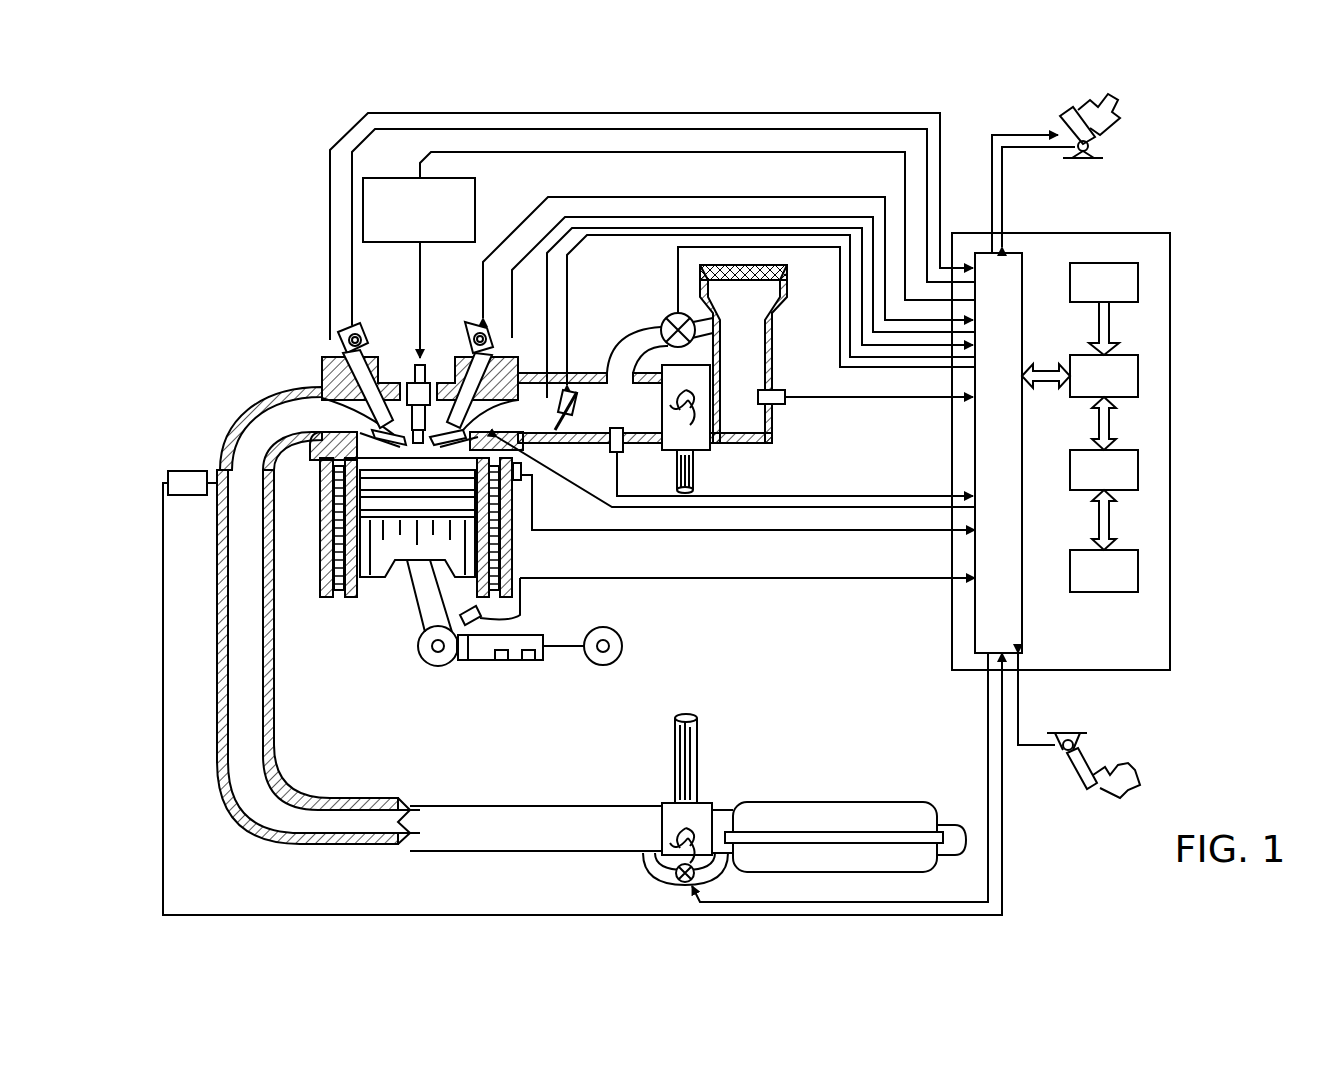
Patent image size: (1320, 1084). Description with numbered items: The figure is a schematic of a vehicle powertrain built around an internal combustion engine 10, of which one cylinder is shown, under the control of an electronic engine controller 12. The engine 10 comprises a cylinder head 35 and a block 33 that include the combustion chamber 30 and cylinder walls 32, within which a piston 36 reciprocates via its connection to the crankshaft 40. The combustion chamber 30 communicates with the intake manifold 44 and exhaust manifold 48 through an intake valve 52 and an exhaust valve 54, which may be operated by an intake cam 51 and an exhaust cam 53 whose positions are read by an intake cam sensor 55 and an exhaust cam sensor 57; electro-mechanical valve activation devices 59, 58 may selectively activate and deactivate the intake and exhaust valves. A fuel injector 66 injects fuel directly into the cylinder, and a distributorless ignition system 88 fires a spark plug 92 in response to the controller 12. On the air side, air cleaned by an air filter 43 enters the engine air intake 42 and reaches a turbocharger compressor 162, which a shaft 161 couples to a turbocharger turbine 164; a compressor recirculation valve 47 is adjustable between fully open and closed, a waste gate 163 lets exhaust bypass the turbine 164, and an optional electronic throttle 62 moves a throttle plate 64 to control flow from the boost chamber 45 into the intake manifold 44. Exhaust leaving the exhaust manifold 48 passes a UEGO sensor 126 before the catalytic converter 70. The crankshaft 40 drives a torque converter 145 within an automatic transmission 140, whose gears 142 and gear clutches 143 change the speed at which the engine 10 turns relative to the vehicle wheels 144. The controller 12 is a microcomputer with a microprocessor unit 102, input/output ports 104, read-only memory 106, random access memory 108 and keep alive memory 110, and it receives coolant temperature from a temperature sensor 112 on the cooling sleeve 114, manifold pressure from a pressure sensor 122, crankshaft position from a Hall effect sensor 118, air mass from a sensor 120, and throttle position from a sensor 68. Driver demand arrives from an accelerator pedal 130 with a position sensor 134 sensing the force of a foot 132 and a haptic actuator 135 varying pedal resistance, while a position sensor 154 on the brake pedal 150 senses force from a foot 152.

The internal combustion engine 10 is at (245, 308).
The electronic engine controller 12 is at (1168, 235).
The combustion chamber 30 is at (417, 450).
The cylinder walls 32 is at (442, 557).
The block 33 is at (427, 544).
The cylinder head 35 is at (318, 355).
The piston 36 is at (400, 548).
The crankshaft 40 is at (425, 665).
The engine air intake 42 is at (679, 346).
The air filter 43 is at (760, 280).
The intake manifold 44 is at (589, 396).
The boost chamber 45 is at (645, 419).
The compressor recirculation valve 47 is at (672, 315).
The exhaust manifold 48 is at (439, 619).
The intake cam 51 is at (478, 322).
The intake valve 52 is at (486, 352).
The exhaust cam 53 is at (362, 325).
The exhaust valve 54 is at (346, 354).
The intake cam sensor 55 is at (494, 348).
The exhaust cam sensor 57 is at (345, 347).
The valve activation device 58 is at (368, 340).
The valve activation device 59 is at (473, 340).
The electronic throttle 62 is at (564, 390).
The throttle plate 64 is at (565, 418).
The fuel injector 66 is at (522, 478).
The throttle position sensor 68 is at (560, 384).
The catalytic converter 70 is at (775, 802).
The distributorless ignition system 88 is at (380, 178).
The spark plug 92 is at (432, 360).
The microprocessor unit 102 is at (1140, 368).
The input/output ports 104 is at (1024, 262).
The read-only memory 106 is at (1140, 280).
The random access memory 108 is at (1140, 468).
The keep alive memory 110 is at (1140, 567).
The temperature sensor 112 is at (748, 502).
The cooling sleeve 114 is at (510, 552).
The Hall effect sensor 118 is at (717, 605).
The air mass sensor 120 is at (785, 393).
The pressure sensor 122 is at (610, 452).
The Universal Exhaust Gas Oxygen sensor 126 is at (168, 478).
The accelerator pedal 130 is at (1090, 164).
The foot 132 is at (1115, 100).
The position sensor 134 is at (1100, 150).
The haptic actuator 135 is at (1050, 128).
The automatic transmission 140 is at (520, 676).
The gears 142 is at (500, 662).
The gear clutches 143 is at (528, 662).
The vehicle wheels 144 is at (603, 665).
The torque converter 145 is at (460, 660).
The brake pedal 150 is at (1079, 736).
The foot 152 is at (1122, 767).
The position sensor 154 is at (1055, 742).
The shaft 161 is at (675, 470).
The turbocharger compressor 162 is at (695, 445).
The waste gate 163 is at (675, 888).
The turbocharger turbine 164 is at (662, 802).